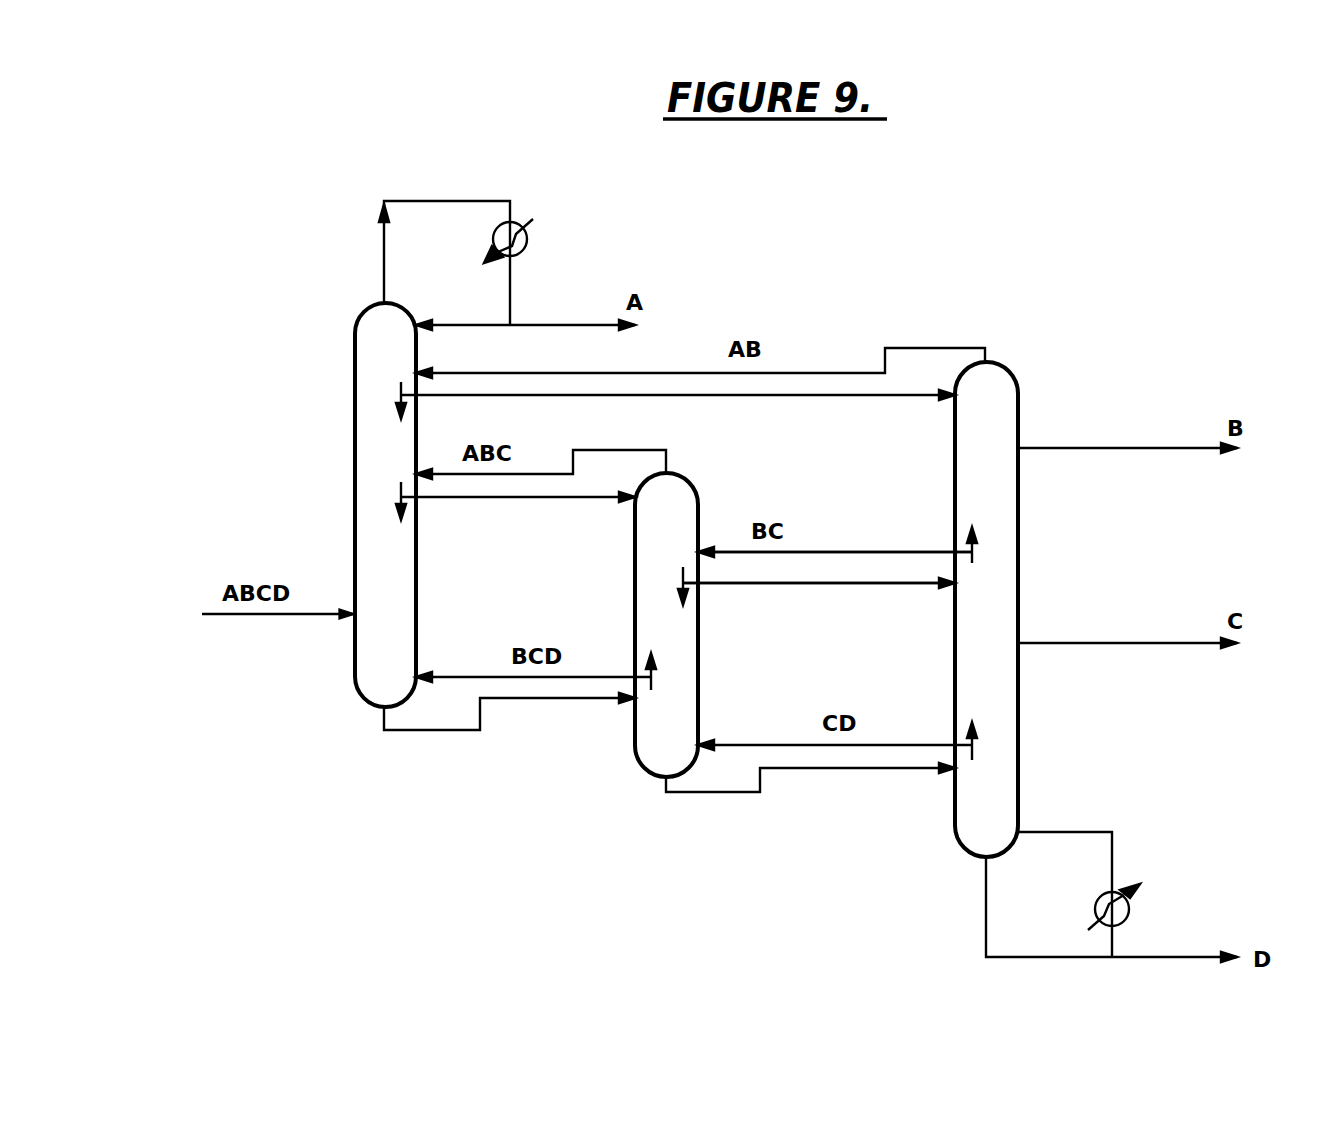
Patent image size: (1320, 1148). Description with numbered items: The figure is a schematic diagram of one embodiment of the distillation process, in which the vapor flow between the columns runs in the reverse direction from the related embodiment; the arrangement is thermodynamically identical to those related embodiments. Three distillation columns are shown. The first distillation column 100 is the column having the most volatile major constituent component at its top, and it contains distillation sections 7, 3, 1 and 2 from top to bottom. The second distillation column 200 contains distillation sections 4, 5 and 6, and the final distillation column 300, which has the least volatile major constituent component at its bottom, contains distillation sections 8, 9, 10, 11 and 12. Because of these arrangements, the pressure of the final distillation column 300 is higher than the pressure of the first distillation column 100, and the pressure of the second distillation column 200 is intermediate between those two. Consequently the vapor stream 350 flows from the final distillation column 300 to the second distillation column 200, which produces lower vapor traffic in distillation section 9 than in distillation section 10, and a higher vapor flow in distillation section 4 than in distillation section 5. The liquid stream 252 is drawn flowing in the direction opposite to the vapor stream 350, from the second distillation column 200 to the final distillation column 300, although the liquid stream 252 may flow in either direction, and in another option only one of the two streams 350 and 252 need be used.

The first distillation zone 1 is at (391, 583).
The second distillation zone 2 is at (391, 677).
The third distillation zone 3 is at (391, 458).
The distillation section 4 is at (672, 536).
The distillation section 5 is at (672, 636).
The sixth distillation zone 6 is at (672, 746).
The seventh distillation zone 7 is at (391, 357).
The eighth distillation zone 8 is at (992, 418).
The distillation section 9 is at (992, 496).
The distillation section 10 is at (246, 616).
The eleventh distillation zone 11 is at (993, 698).
The twelfth distillation zone 12 is at (993, 823).
The first distillation column 100 is at (421, 613).
The second distillation column 200 is at (701, 683).
The final distillation column 300 is at (1021, 760).
The liquid stream 252 is at (840, 583).
The vapor stream 350 is at (840, 553).